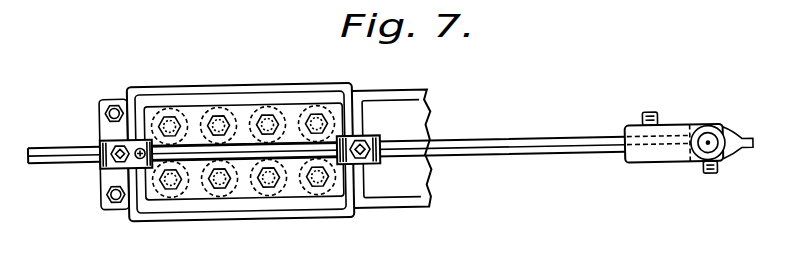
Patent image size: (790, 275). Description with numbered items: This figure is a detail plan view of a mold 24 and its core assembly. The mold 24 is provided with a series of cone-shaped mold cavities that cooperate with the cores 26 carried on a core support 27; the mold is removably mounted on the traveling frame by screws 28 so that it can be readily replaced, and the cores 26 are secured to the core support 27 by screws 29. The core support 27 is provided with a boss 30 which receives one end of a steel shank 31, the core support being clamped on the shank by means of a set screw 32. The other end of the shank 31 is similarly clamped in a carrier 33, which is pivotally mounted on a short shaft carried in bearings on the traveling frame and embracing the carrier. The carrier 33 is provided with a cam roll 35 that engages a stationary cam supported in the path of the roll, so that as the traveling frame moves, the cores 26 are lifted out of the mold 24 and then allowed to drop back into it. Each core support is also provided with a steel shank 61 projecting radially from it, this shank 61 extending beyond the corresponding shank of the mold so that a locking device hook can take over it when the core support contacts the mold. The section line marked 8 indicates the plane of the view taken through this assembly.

The section line 8- 8 is at (48, 160).
The mold 24 is at (298, 211).
The core 26 is at (203, 108).
The core support 27 is at (247, 180).
The screw 28 is at (113, 99).
The screw 29 is at (301, 111).
The boss 30 is at (366, 164).
The steel shank 31 is at (535, 141).
The set screw 32 is at (363, 137).
The carrier 33 is at (665, 167).
The cam roll 35 is at (712, 132).
The steel shank 61 is at (68, 141).